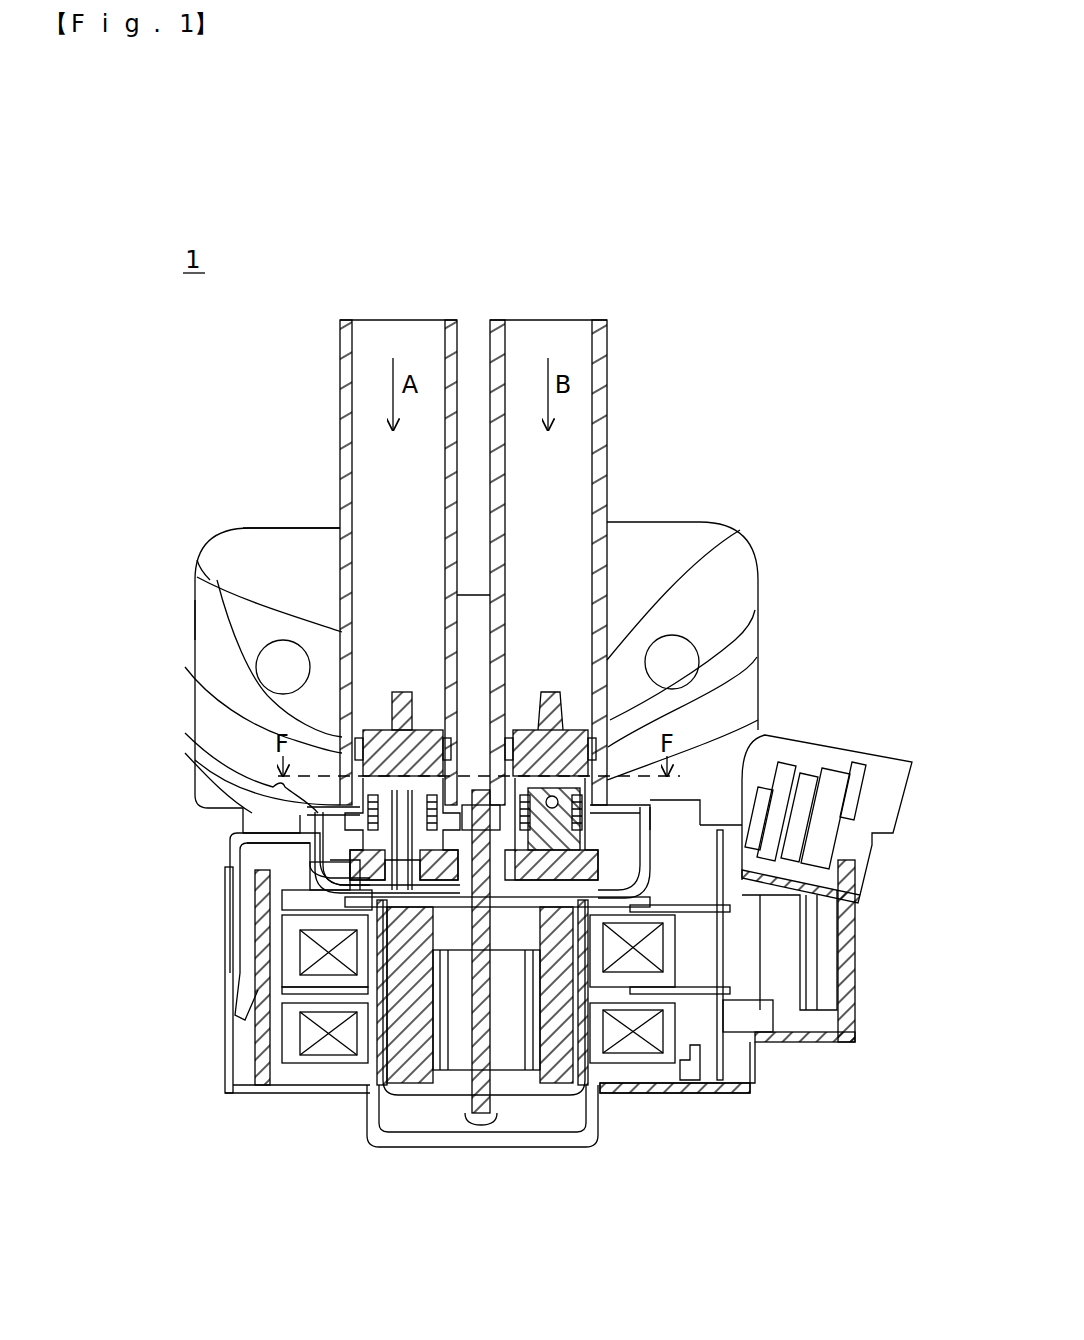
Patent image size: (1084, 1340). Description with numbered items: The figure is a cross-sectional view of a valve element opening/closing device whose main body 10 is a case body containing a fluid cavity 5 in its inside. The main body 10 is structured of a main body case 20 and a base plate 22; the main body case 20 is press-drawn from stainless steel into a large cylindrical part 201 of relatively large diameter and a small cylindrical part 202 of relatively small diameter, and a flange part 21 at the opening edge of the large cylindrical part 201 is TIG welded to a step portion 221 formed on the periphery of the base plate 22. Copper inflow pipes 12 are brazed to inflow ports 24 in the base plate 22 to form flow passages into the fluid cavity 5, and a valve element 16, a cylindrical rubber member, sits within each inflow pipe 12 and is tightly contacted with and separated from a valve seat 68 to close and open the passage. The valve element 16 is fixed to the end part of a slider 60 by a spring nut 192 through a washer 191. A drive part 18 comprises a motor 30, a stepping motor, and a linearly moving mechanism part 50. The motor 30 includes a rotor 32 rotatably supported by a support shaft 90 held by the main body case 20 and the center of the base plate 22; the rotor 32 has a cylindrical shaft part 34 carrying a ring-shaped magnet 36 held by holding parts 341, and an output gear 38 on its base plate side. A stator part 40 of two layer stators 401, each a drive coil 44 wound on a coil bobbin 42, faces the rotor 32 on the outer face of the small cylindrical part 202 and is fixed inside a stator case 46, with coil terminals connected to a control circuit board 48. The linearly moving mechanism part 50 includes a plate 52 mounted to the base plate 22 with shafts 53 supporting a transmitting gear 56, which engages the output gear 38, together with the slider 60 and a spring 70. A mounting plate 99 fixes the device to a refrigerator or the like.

The inflow pipe 12 is at (455, 340).
The main body 10 is at (803, 623).
The mounting plate 99 is at (243, 528).
The spring nut 192 is at (197, 557).
The washer 191 is at (198, 577).
The valve element 16 is at (260, 735).
The valve seat 68 is at (650, 780).
The inflow port 24 is at (705, 790).
The base plate 22 is at (700, 820).
The slider 60 is at (372, 745).
The spring 70 is at (600, 720).
The output gear 38 is at (600, 610).
The flange part 21 is at (243, 810).
The step portion 221 is at (345, 850).
The linearly moving mechanism part 50 is at (355, 862).
The large cylindrical part 201 is at (320, 840).
The transmitting gear 56 is at (325, 852).
The shaft 53 is at (310, 862).
The plate 52 is at (300, 890).
The coil bobbin 42 is at (290, 950).
The drive coil 44 is at (240, 985).
The stator part 40 is at (757, 1045).
The stator 401 is at (695, 1080).
The control circuit board 48 is at (760, 1045).
The stator case 46 is at (855, 1035).
The magnet 36 is at (615, 1085).
The small cylindrical part 202 is at (655, 1090).
The cylindrical shaft part 34 is at (550, 1090).
The holding part 341 is at (598, 1090).
The support shaft 90 is at (480, 1118).
The rotor 32 is at (598, 1110).
The motor 30 is at (330, 1120).
The drive part 18 is at (210, 1200).
The main body case 20 is at (805, 810).
The fluid cavity 5 is at (800, 890).